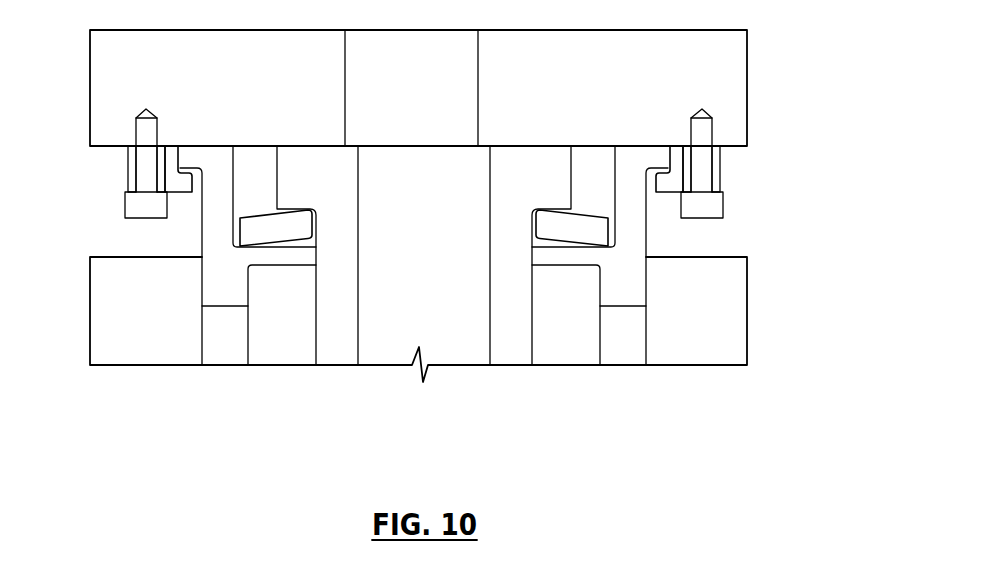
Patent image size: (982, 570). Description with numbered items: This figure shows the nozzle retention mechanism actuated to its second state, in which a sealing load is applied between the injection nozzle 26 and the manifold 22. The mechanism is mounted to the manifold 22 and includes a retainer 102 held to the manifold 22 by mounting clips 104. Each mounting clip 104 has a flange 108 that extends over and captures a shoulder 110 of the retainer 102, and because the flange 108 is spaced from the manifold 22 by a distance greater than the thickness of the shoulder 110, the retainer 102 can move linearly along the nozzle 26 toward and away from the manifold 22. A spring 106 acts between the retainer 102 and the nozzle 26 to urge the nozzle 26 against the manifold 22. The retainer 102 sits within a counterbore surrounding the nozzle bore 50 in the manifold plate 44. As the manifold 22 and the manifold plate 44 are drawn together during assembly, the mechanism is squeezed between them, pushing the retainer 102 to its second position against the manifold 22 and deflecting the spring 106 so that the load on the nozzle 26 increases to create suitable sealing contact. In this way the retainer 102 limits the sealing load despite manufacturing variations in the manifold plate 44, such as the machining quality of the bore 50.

The manifold 22 is at (747, 93).
The manifold plate 44 is at (747, 315).
The nozzle bore 50 is at (291, 333).
The injection nozzle 26 is at (530, 338).
The retainer 102 is at (646, 292).
The mounting clip 104 is at (125, 162).
The spring 106 is at (557, 240).
The flange 108 is at (177, 195).
The shoulder 110 is at (188, 157).